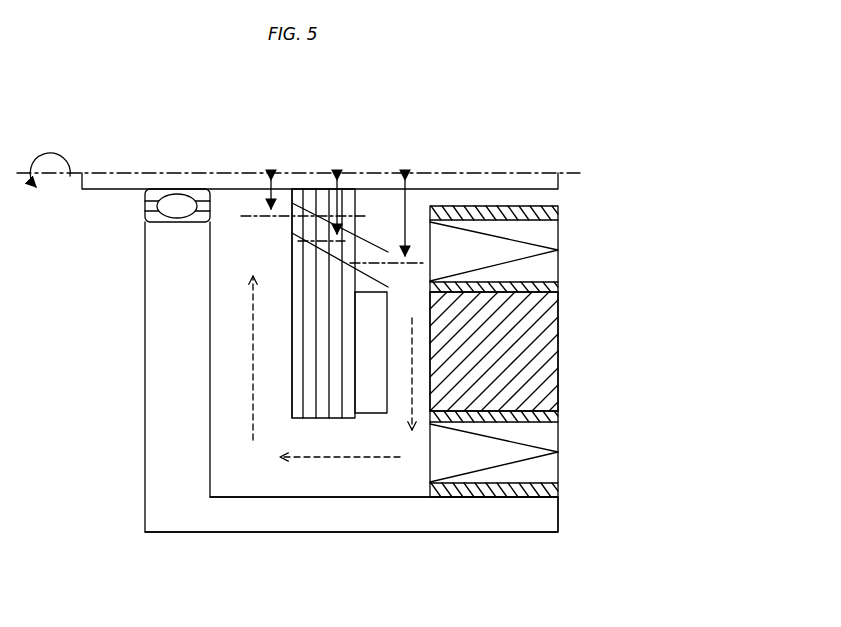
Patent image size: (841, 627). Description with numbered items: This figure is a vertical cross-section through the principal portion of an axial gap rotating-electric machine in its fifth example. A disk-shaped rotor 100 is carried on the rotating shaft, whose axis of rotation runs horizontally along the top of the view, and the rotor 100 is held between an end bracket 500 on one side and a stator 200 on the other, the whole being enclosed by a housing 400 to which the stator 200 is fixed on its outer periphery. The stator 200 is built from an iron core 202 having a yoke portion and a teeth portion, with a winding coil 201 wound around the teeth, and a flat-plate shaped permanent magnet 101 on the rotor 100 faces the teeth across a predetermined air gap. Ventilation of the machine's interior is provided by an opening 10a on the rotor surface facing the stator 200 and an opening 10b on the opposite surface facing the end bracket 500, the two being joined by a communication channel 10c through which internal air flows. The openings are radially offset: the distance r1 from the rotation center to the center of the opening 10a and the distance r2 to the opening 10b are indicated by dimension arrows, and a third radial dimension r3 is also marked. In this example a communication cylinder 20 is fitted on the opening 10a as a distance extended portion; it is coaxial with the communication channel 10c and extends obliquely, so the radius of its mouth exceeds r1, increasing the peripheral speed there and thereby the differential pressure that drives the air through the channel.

The opening 10a is at (352, 252).
The opening 10b is at (291, 228).
The communication channel 10c is at (312, 235).
The communication cylinder 20 is at (385, 285).
The rotor 100 is at (322, 418).
The permanent magnet 101 is at (372, 405).
The stator 200 is at (547, 351).
The winding coil 201 is at (543, 270).
The iron core 202 is at (543, 335).
The housing 400 is at (502, 523).
The end bracket 500 is at (146, 461).
The first distance r1 is at (338, 170).
The second distance r2 is at (273, 170).
The radius r3 is at (406, 170).